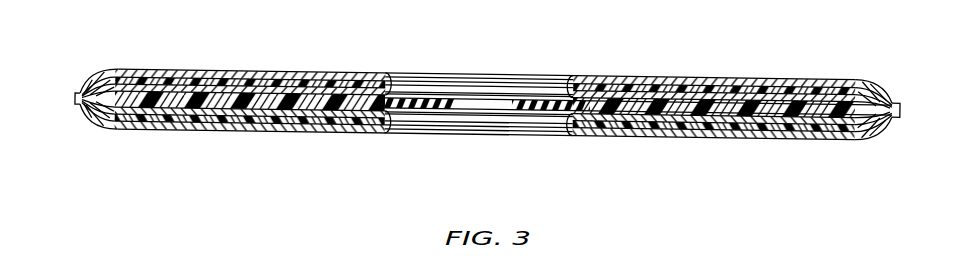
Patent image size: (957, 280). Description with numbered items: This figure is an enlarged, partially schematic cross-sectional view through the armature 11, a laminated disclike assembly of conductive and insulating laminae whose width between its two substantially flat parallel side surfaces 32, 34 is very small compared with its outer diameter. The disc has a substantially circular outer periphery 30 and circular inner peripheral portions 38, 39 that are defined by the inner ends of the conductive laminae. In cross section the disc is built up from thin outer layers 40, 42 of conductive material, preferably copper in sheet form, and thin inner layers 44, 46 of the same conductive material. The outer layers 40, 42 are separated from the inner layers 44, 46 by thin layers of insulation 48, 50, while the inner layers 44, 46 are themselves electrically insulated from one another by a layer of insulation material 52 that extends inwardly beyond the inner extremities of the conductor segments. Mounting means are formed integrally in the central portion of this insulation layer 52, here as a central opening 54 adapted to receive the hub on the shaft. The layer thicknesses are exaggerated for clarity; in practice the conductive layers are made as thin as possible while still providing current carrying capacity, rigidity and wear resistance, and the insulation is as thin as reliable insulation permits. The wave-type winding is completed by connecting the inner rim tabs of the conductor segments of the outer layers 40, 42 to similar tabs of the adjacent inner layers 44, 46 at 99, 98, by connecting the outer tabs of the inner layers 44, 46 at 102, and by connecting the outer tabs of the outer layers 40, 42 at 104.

The armature 11 is at (487, 79).
The outer periphery 30 is at (83, 83).
The connection of outer tabs of inner layers 102 is at (86, 130).
The side surface 34 is at (250, 57).
The side surface 32 is at (249, 150).
The inner rim tab connection 98 is at (405, 64).
The inner rim tab connection 99 is at (400, 141).
The central opening 54 is at (639, 89).
The inner peripheral portion 39 is at (583, 65).
The inner peripheral portion 38 is at (572, 145).
The layer of insulation 50 is at (714, 64).
The inner layer of conductive material 46 is at (714, 71).
The layer of insulation material 52 is at (714, 78).
The inner layer of conductive material 44 is at (713, 147).
The layer of insulation 48 is at (713, 150).
The outer layer of conductive material 40 is at (713, 155).
The outer layer of conductive material 42 is at (863, 89).
The connection of outer tabs of outer layers 104 is at (897, 141).